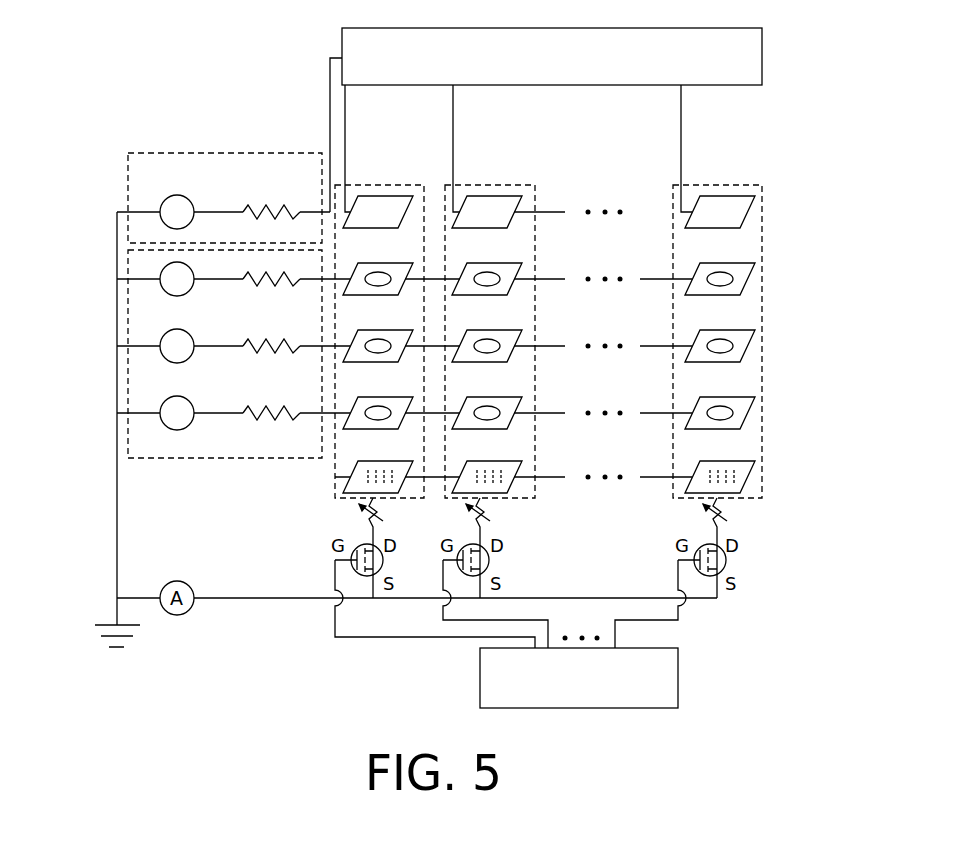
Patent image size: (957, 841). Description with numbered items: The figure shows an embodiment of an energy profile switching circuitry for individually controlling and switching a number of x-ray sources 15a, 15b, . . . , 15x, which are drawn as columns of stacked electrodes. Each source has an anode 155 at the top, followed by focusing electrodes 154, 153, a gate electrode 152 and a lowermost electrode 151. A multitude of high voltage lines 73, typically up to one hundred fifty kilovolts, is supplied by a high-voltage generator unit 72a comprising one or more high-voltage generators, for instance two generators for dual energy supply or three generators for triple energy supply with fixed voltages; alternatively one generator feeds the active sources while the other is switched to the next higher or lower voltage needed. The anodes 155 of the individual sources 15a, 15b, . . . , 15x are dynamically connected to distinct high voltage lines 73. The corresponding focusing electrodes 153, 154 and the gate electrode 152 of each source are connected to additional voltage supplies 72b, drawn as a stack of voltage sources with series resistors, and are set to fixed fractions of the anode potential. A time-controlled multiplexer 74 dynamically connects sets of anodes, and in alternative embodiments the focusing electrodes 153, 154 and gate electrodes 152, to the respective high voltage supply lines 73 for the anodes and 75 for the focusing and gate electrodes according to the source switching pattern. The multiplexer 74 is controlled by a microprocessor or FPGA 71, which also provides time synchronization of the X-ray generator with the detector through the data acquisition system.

The time-controlled multiplexer 74 is at (762, 45).
The high voltage lines 73 is at (330, 118).
The high-voltage generator unit 72a is at (198, 153).
The additional voltage supplies 72b is at (128, 363).
The high voltage supply lines for focusing and gate electrodes 75 is at (313, 344).
The x-ray source 15a is at (395, 185).
The x-ray source 15b is at (513, 185).
The x-ray source 15x is at (720, 185).
The anode 155 is at (748, 208).
The focusing electrode 154 is at (748, 275).
The focusing electrode 153 is at (748, 342).
The gate electrode 152 is at (748, 409).
The electrode layer 151 is at (748, 473).
The microprocessor or FPGA 71 is at (678, 678).